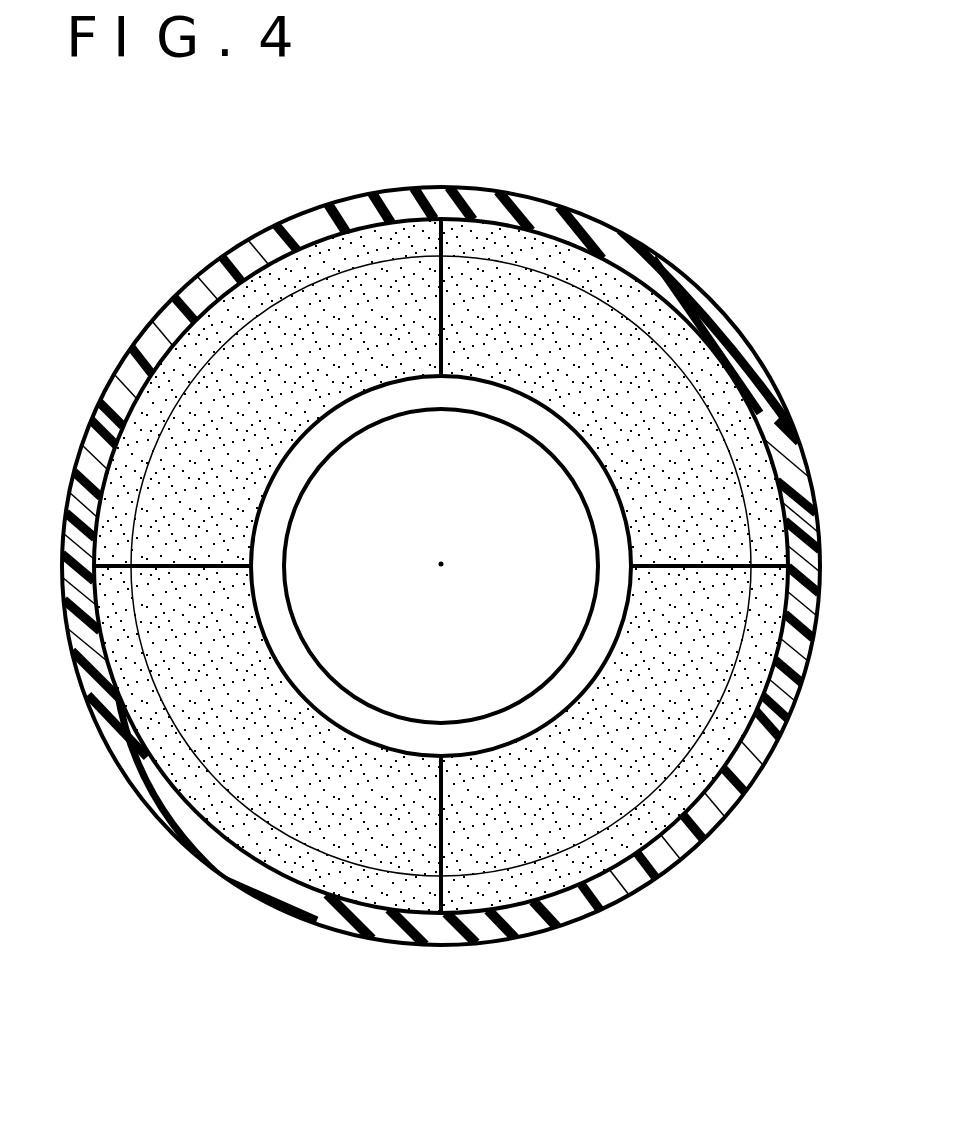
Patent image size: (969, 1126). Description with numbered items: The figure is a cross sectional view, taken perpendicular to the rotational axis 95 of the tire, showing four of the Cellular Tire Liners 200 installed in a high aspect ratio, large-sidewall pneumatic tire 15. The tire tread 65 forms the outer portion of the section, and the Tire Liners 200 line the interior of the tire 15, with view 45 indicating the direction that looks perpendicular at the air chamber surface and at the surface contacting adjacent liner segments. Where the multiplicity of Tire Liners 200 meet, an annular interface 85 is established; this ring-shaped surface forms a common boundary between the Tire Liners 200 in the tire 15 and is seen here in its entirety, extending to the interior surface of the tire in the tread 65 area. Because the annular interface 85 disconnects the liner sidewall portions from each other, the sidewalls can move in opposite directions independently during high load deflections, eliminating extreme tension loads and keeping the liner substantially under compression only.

The pneumatic tire with large sidewalls 15 is at (368, 425).
The view 45 is at (608, 352).
The tire tread 65 is at (386, 190).
The annular interface 85 is at (256, 295).
The rotational axis of the tire 95 is at (436, 568).
The cellular tire liner 200 is at (548, 340).